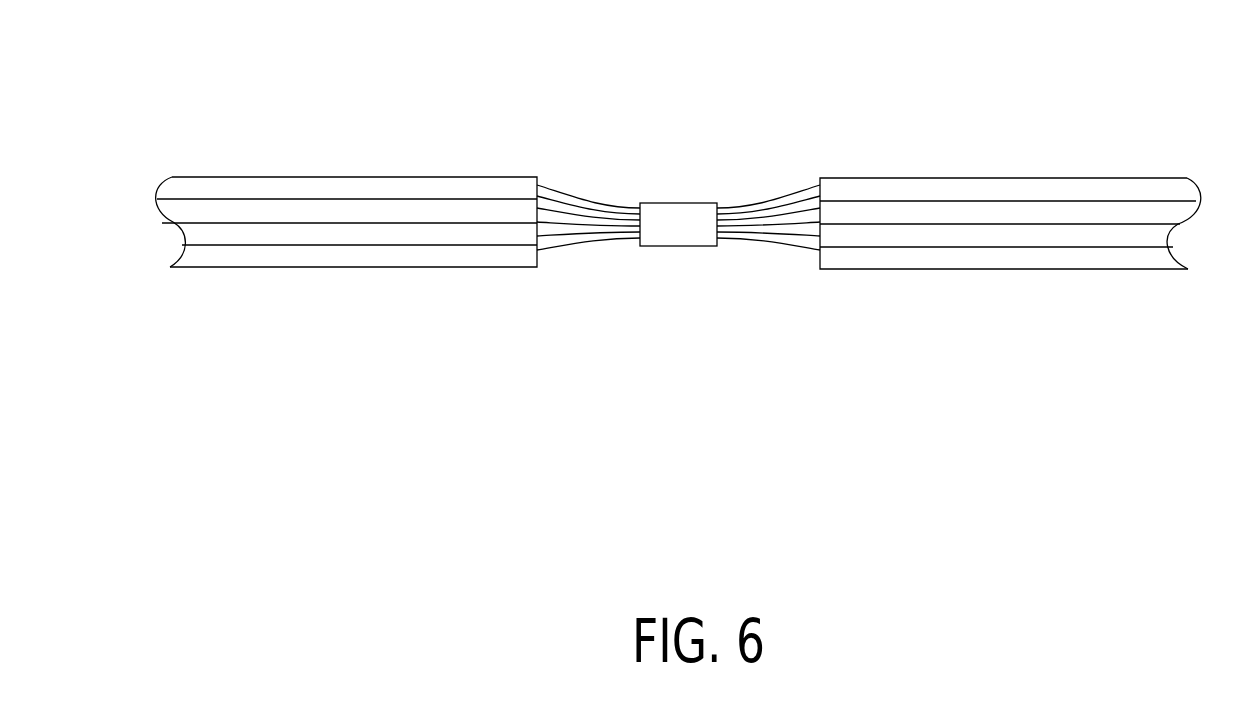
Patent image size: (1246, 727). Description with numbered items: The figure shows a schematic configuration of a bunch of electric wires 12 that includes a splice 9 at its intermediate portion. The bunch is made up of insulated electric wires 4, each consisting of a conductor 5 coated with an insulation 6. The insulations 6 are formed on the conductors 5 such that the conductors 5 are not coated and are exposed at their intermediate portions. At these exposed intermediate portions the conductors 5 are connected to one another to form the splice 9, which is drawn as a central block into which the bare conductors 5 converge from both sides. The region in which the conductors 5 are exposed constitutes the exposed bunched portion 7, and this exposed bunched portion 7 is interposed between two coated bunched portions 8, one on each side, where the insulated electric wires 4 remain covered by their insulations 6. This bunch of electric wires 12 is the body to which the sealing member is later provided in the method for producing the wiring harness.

The bunch of electric wires 12 is at (878, 95).
The coated bunched portion 8 is at (167, 287).
The insulation 6 is at (498, 190).
The insulated electric wire 4 is at (277, 212).
The exposed bunched portion 7 is at (540, 287).
The splice 9 is at (672, 217).
The conductor 5 is at (578, 215).